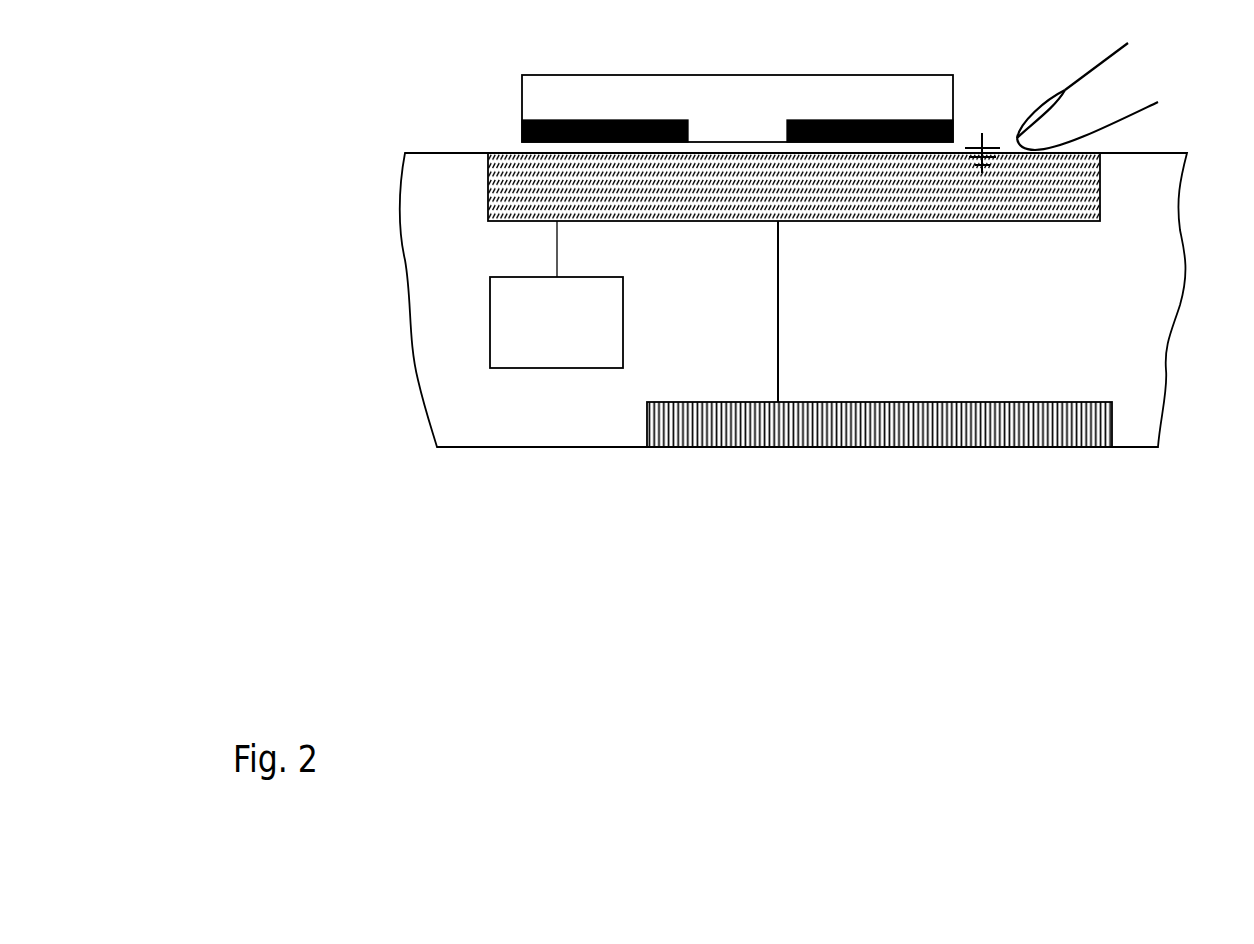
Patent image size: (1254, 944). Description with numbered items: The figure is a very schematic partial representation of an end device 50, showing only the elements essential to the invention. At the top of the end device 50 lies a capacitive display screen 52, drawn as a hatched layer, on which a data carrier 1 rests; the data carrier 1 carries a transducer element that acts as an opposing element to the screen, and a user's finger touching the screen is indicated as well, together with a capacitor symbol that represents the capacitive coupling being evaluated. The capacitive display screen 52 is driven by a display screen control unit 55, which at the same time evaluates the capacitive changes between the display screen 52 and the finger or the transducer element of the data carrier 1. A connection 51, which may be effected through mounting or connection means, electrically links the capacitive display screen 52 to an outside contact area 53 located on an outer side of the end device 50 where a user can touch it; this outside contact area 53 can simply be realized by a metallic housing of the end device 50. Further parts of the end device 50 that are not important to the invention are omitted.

The data carrier 1 is at (749, 122).
The end device 50 is at (1112, 306).
The connection 51 is at (779, 322).
The capacitive display screen 52 is at (488, 175).
The outside contact area 53 is at (778, 447).
The display screen control unit 55 is at (556, 294).